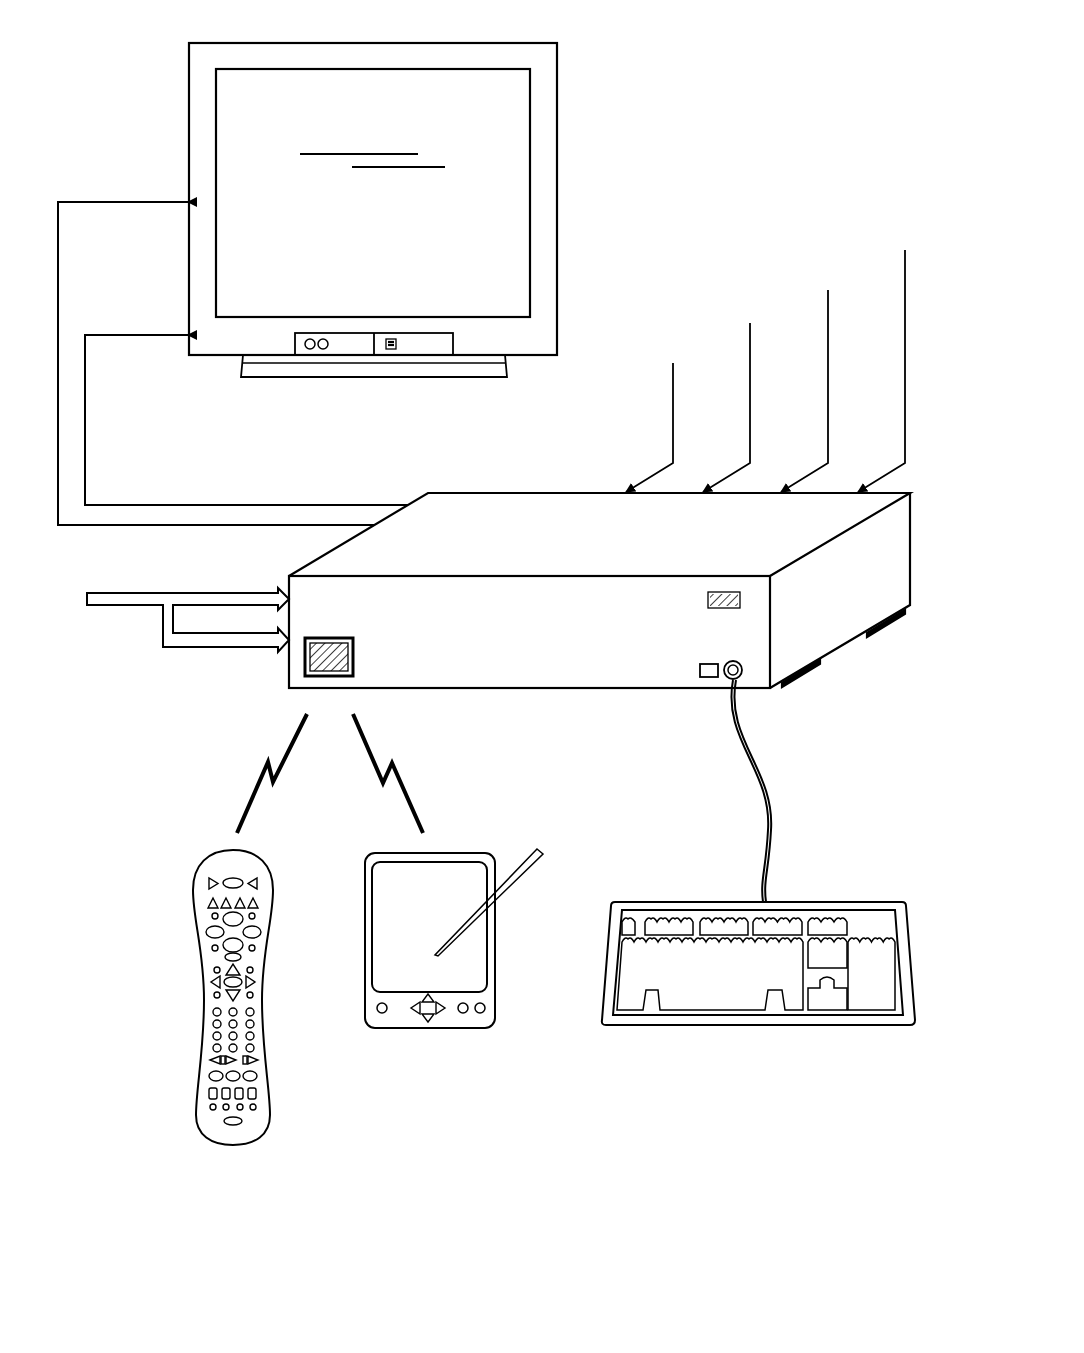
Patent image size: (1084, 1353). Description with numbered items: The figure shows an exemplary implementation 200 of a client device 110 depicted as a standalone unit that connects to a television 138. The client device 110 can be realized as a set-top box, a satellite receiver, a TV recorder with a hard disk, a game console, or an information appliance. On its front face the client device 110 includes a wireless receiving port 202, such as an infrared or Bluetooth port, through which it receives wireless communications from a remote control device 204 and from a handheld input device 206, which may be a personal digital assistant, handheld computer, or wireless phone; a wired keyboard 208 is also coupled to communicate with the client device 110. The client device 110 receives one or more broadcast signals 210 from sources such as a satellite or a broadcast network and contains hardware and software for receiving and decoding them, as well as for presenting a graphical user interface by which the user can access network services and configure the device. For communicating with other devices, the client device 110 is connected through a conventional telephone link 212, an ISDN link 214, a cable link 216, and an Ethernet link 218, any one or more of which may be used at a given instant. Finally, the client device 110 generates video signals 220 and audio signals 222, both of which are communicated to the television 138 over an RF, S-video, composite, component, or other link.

The exemplary implementation 200 is at (684, 72).
The television 138 is at (373, 210).
The video signal(s) 220 is at (216, 343).
The audio signal(s) 222 is at (246, 400).
The broadcast signals 210 is at (158, 608).
The client device 110 is at (622, 416).
The wireless receiving port 202 is at (343, 638).
The telephone link 212 is at (673, 313).
The ISDN link 214 is at (750, 273).
The cable link 216 is at (828, 238).
The Ethernet link 218 is at (905, 200).
The remote control device 204 is at (196, 878).
The handheld input device 206 is at (448, 853).
The wired keyboard 208 is at (808, 902).